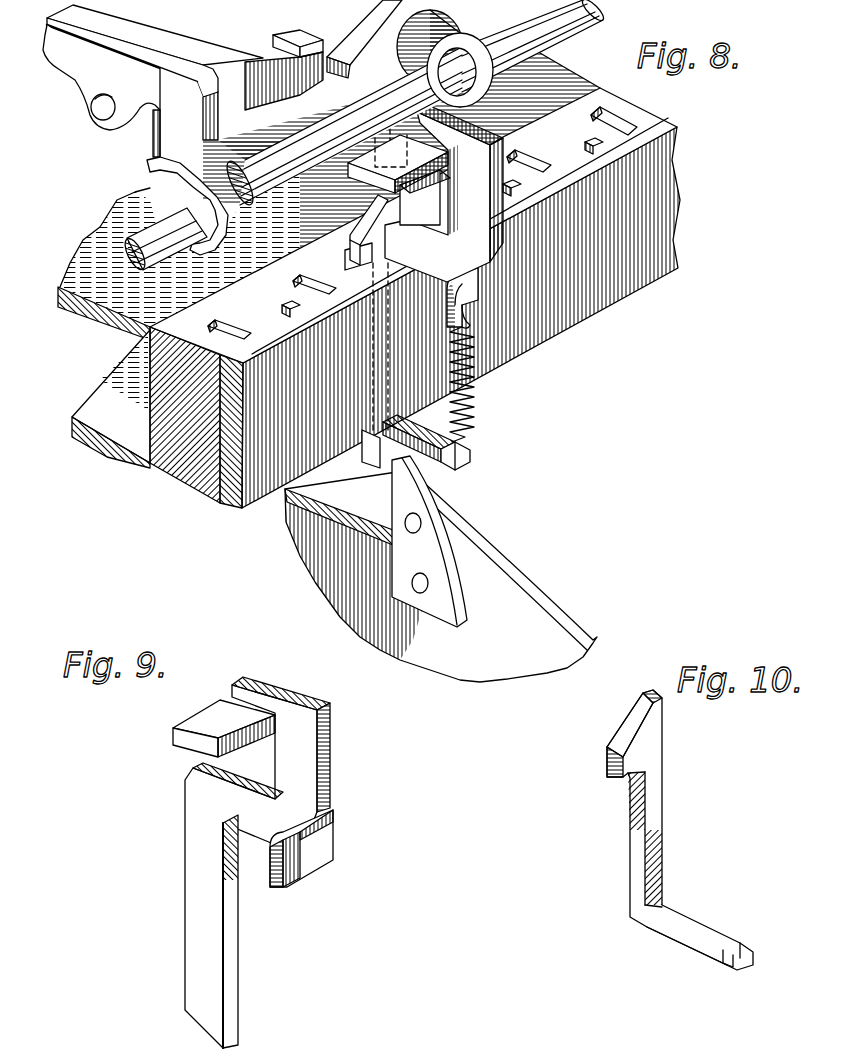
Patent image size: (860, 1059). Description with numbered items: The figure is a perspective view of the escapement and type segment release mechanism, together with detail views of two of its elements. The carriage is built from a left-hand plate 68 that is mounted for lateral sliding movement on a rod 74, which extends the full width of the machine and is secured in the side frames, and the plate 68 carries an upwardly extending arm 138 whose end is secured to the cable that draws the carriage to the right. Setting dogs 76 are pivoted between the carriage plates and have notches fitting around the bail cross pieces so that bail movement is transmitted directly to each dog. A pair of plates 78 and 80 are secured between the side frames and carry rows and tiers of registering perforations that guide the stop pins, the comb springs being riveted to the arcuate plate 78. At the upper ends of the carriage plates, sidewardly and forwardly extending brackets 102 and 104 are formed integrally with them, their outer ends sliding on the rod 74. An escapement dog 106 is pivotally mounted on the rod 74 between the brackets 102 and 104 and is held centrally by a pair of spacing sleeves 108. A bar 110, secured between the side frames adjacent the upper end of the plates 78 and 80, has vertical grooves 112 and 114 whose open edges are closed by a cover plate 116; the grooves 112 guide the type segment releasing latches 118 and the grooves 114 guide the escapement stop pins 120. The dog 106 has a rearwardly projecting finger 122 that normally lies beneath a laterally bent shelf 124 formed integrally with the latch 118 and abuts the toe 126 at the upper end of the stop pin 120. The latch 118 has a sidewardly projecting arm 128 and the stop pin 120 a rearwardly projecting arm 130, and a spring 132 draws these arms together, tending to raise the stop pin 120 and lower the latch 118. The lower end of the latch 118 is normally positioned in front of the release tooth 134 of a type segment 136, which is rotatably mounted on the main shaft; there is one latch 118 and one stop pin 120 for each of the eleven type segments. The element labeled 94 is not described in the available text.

In FIG. 8, the left-hand carriage plate 68 is at (188, 44).
In FIG. 8, the rod 74 is at (160, 247).
In FIG. 8, the setting dog 76 is at (83, 73).
In FIG. 8, the arcuate plate 78 is at (90, 313).
In FIG. 8, the plate 80 is at (107, 453).
In FIG. 8, the rod 94 is at (565, 28).
In FIG. 8, the bracket 102 is at (348, 72).
In FIG. 8, the bracket 104 is at (153, 197).
In FIG. 8, the escapement dog 106 is at (452, 38).
In FIG. 8, the spacing sleeve 108 is at (277, 210).
In FIG. 8, the bar 110 is at (173, 467).
In FIG. 8, the vertical groove 112 is at (540, 163).
In FIG. 8, the vertical groove 114 is at (597, 158).
In FIG. 8, the cover plate 116 is at (606, 300).
In FIG. 8, the type segment releasing latch 118 is at (372, 453).
In FIG. 9, the type segment releasing latch 118 is at (197, 912).
In FIG. 8, the escapement stop pin 120 is at (363, 364).
In FIG. 10, the escapement stop pin 120 is at (653, 812).
In FIG. 8, the finger 122 is at (357, 204).
In FIG. 8, the shelf 124 is at (465, 138).
In FIG. 9, the shelf 124 is at (215, 716).
In FIG. 8, the toe 126 is at (357, 297).
In FIG. 10, the toe 126 is at (655, 728).
In FIG. 8, the arm 128 is at (493, 293).
In FIG. 9, the arm 128 is at (293, 862).
In FIG. 8, the arm 130 is at (370, 440).
In FIG. 10, the arm 130 is at (703, 927).
In FIG. 8, the spring 132 is at (470, 400).
In FIG. 8, the release tooth 134 is at (403, 500).
In FIG. 8, the type segment 136 is at (500, 572).
In FIG. 8, the arm 138 is at (330, 38).